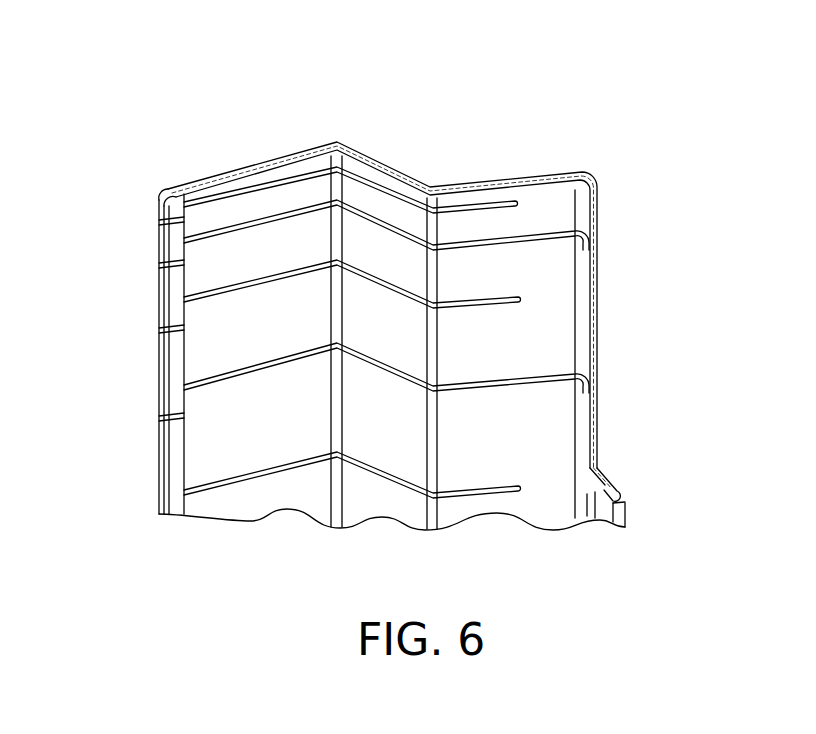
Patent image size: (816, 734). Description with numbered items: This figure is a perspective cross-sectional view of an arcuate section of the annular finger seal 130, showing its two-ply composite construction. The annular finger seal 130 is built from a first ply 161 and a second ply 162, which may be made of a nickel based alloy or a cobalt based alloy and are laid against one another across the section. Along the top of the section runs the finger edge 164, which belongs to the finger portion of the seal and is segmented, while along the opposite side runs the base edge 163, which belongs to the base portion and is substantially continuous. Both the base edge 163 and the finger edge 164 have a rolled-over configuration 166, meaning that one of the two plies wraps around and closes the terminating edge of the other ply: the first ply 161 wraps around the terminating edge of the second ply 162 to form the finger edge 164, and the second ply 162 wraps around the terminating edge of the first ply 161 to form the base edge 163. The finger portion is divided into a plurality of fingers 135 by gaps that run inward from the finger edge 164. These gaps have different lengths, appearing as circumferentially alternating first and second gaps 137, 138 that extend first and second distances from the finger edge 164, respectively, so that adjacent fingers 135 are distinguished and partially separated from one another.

The annular finger seal 130 is at (148, 108).
The fingers 135 is at (250, 338).
The first gaps 137 is at (562, 231).
The second gaps 138 is at (502, 200).
The first ply 161 is at (171, 210).
The second ply 162 is at (241, 176).
The base edge 163 is at (622, 505).
The finger edge 164 is at (162, 308).
The rolled-over configuration 166 is at (158, 183).